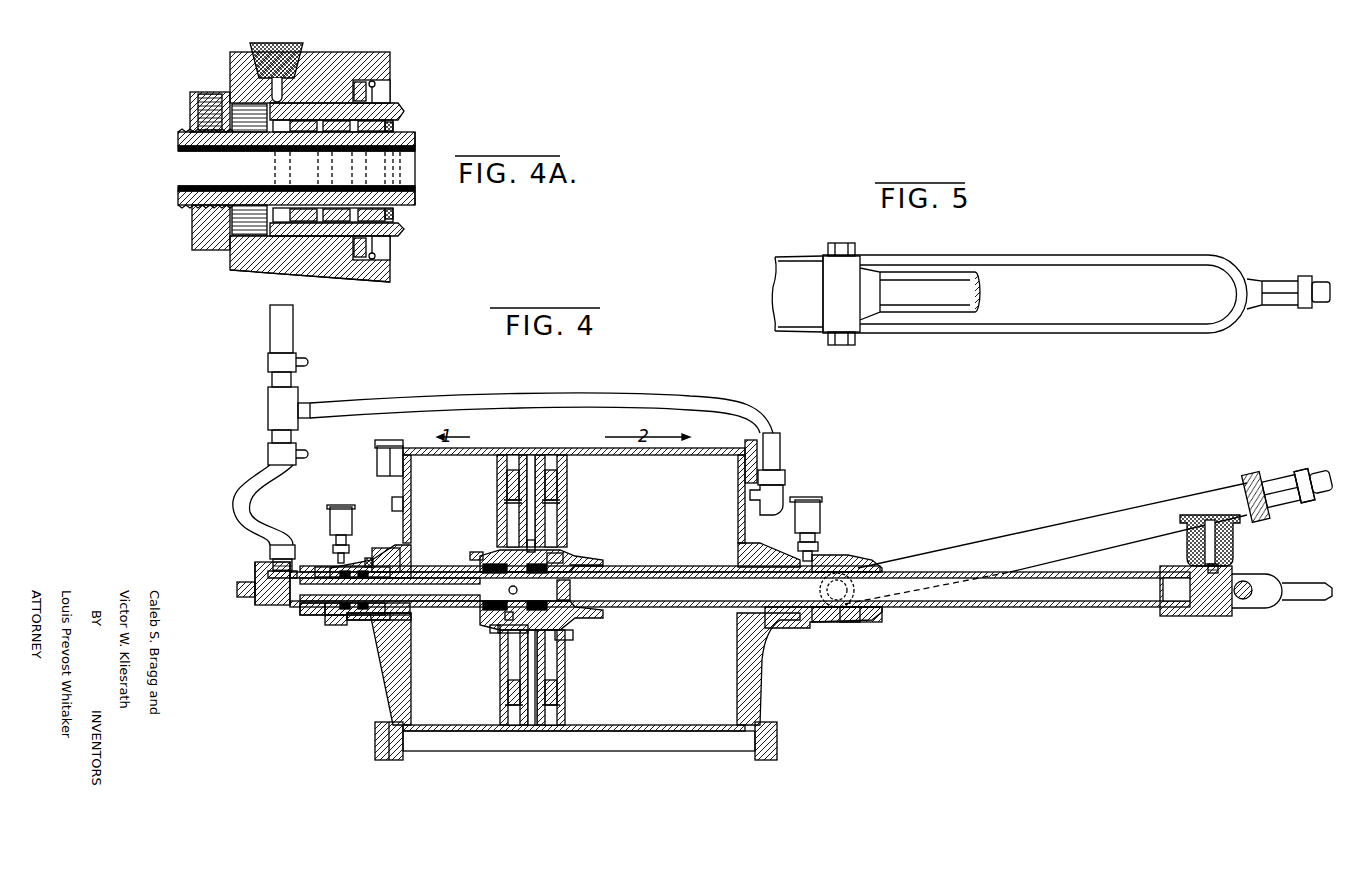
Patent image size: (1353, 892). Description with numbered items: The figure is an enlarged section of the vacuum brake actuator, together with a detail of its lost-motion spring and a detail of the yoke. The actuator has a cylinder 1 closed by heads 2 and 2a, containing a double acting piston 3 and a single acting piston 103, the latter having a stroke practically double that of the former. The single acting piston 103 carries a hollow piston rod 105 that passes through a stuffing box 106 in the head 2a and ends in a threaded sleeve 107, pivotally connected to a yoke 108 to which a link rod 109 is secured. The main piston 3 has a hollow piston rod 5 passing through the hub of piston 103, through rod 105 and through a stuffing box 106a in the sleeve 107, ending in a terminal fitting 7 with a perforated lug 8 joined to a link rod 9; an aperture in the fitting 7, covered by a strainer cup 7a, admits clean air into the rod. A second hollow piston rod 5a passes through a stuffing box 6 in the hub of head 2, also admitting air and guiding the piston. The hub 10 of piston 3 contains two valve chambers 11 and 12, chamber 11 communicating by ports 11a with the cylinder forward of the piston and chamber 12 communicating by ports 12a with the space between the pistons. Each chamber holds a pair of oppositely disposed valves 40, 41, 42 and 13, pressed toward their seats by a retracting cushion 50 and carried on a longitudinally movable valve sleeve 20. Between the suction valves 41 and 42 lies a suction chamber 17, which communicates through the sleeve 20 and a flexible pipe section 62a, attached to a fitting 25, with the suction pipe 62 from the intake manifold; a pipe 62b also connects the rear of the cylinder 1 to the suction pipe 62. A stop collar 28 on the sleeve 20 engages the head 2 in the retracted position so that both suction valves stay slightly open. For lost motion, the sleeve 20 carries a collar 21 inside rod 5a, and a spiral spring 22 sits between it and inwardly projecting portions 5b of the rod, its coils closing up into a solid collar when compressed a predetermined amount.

In FIG. 4, the cylinder 1 is at (512, 455).
In FIG. 4A, the cylinder head 2 is at (328, 270).
In FIG. 4, the cylinder head 2 is at (403, 485).
In FIG. 4, the cylinder head 2a is at (748, 527).
In FIG. 4, the double acting piston 3 is at (503, 657).
In FIG. 4, the hollow piston rod 5 is at (1042, 608).
In FIG. 4A, the hollow piston rod 5a is at (396, 110).
In FIG. 4, the hollow piston rod 5a is at (398, 572).
In FIG. 4A, the inwardly projecting portions 5b is at (280, 238).
In FIG. 4, the inwardly projecting portions 5b is at (338, 556).
In FIG. 4A, the stuffing box 6 is at (352, 270).
In FIG. 4, the stuffing box 6 is at (355, 620).
In FIG. 4, the terminal fitting 7 is at (1200, 607).
In FIG. 4, the strainer cup 7a is at (1233, 537).
In FIG. 4, the perforated lug 8 is at (1245, 583).
In FIG. 4, the link rod 9 is at (1313, 598).
In FIG. 4, the hub 10 is at (485, 568).
In FIG. 4, the valve chamber 11 is at (488, 562).
In FIG. 4, the port 11a is at (505, 620).
In FIG. 4, the valve chamber 12 is at (563, 560).
In FIG. 4, the port 12a is at (535, 552).
In FIG. 4, the flange 13 is at (570, 565).
In FIG. 4, the suction chamber 17 is at (498, 630).
In FIG. 4A, the valve sleeve 20 is at (190, 186).
In FIG. 4, the valve sleeve 20 is at (418, 580).
In FIG. 4A, the collar 21 is at (392, 128).
In FIG. 4, the collar 21 is at (368, 558).
In FIG. 4A, the spiral spring 22 is at (397, 237).
In FIG. 4, the spiral spring 22 is at (340, 616).
In FIG. 4, the fitting 25 is at (280, 606).
In FIG. 4A, the stop collar 28 is at (197, 237).
In FIG. 4, the stop collar 28 is at (322, 615).
In FIG. 4, the valve 40 is at (470, 615).
In FIG. 4, the suction valve 41 is at (493, 627).
In FIG. 4, the suction valve 42 is at (557, 637).
In FIG. 4, the retracting means 50 is at (548, 553).
In FIG. 4, the suction pipe 62 is at (295, 332).
In FIG. 4, the flexible pipe section 62a is at (247, 487).
In FIG. 4, the pipe 62b is at (505, 403).
In FIG. 4, the single acting piston 103 is at (552, 665).
In FIG. 4, the hollow piston rod 105 is at (670, 568).
In FIG. 4, the stuffing box 106 is at (792, 626).
In FIG. 4, the stuffing box 106a is at (857, 622).
In FIG. 5, the threaded sleeve 107 is at (845, 280).
In FIG. 4, the threaded sleeve 107 is at (843, 558).
In FIG. 5, the yoke 108 is at (992, 330).
In FIG. 4, the yoke 108 is at (997, 545).
In FIG. 5, the link rod 109 is at (1320, 305).
In FIG. 4, the link rod 109 is at (1320, 482).